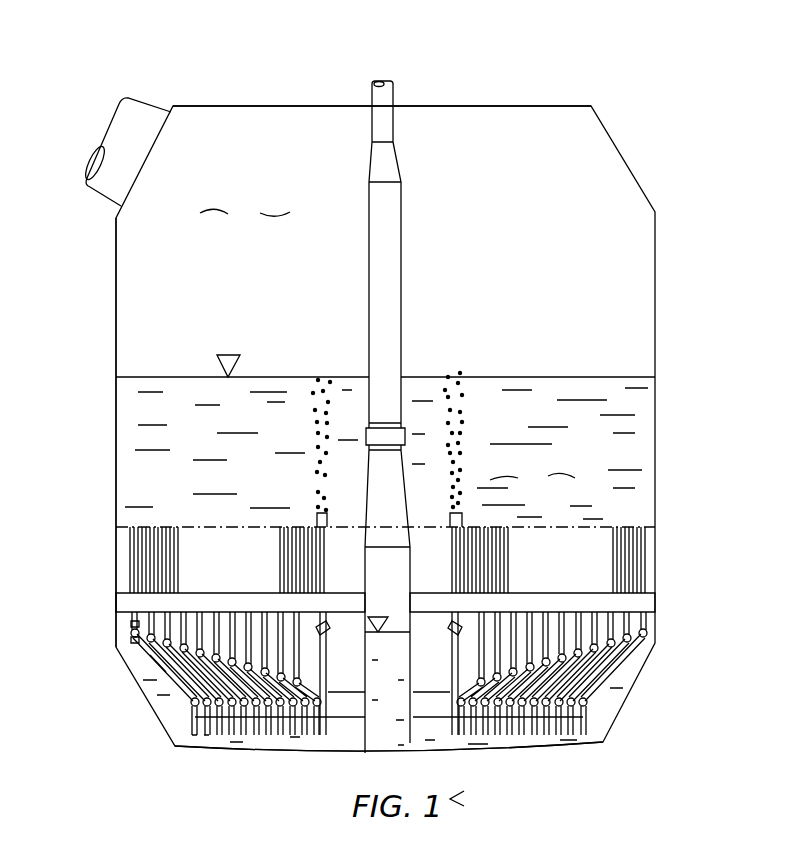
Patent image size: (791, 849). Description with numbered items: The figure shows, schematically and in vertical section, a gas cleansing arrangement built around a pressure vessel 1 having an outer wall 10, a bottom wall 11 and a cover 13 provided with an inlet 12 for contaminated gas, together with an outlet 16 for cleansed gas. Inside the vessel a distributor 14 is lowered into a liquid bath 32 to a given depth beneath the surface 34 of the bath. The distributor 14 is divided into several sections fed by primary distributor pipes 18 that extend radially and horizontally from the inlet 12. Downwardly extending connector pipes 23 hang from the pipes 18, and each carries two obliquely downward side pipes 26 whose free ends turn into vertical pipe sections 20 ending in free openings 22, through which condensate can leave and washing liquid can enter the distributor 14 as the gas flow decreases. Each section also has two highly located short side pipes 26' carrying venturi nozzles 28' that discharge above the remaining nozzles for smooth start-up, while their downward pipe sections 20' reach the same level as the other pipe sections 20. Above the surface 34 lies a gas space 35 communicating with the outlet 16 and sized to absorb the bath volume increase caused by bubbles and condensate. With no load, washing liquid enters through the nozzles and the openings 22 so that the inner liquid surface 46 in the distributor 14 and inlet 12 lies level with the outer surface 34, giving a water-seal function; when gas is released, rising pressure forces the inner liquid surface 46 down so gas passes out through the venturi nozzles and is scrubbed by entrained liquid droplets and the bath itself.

The pressure vessel 1 is at (116, 234).
The outer wall 10 is at (114, 288).
The bottom wall 11 is at (271, 752).
The inlet 12 is at (395, 92).
The cover 13 is at (304, 105).
The distributor 14 is at (185, 526).
The outlet 16 is at (116, 133).
The primary distributor pipes 18 is at (337, 600).
The pipe section 20 is at (343, 678).
The downwardly extending pipe sections 20' is at (389, 673).
The free opening 22 is at (213, 748).
The connector pipes 23 is at (132, 640).
The side pipes 26 is at (103, 671).
The short side pipes 26' is at (389, 632).
The venturi nozzles 28' is at (387, 449).
The liquid bath 32 is at (386, 566).
The surface 34 is at (275, 377).
The gas space 35 is at (245, 215).
The inner liquid surface 46 is at (400, 632).